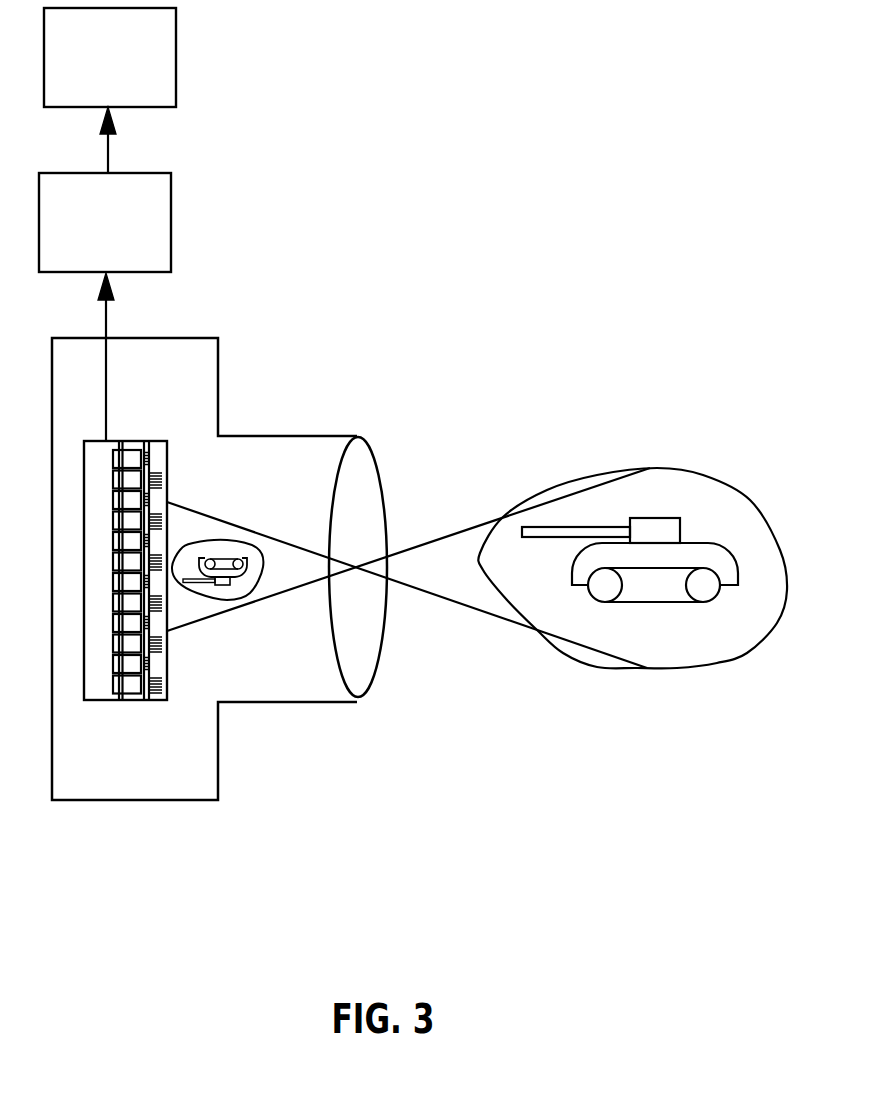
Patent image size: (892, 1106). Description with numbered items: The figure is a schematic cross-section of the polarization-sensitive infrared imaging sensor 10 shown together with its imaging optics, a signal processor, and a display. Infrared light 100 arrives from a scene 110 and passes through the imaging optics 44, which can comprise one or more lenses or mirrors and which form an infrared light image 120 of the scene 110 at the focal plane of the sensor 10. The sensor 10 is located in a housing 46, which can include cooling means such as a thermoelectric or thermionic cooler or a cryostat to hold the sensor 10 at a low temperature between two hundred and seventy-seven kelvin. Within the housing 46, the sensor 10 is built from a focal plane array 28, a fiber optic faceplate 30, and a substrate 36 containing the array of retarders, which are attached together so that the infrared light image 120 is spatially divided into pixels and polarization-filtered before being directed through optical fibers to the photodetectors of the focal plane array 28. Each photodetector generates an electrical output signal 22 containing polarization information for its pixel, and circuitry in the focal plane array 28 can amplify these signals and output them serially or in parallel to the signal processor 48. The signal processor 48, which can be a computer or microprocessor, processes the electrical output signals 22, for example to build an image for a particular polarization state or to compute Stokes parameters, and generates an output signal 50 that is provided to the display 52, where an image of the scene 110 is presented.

The polarization-sensitive infrared imaging sensor 10 is at (185, 830).
The electrical output signal 22 is at (107, 378).
The focal plane array 28 is at (102, 700).
The fiber optic faceplate 30 is at (135, 700).
The substrate 36 is at (157, 700).
The imaging optics 44 is at (371, 663).
The housing 46 is at (218, 756).
The signal processor 48 is at (94, 260).
The output signal 50 is at (110, 142).
The display 52 is at (96, 82).
The infrared light 100 is at (432, 543).
The scene 110 is at (733, 660).
The infrared light image 120 is at (221, 600).